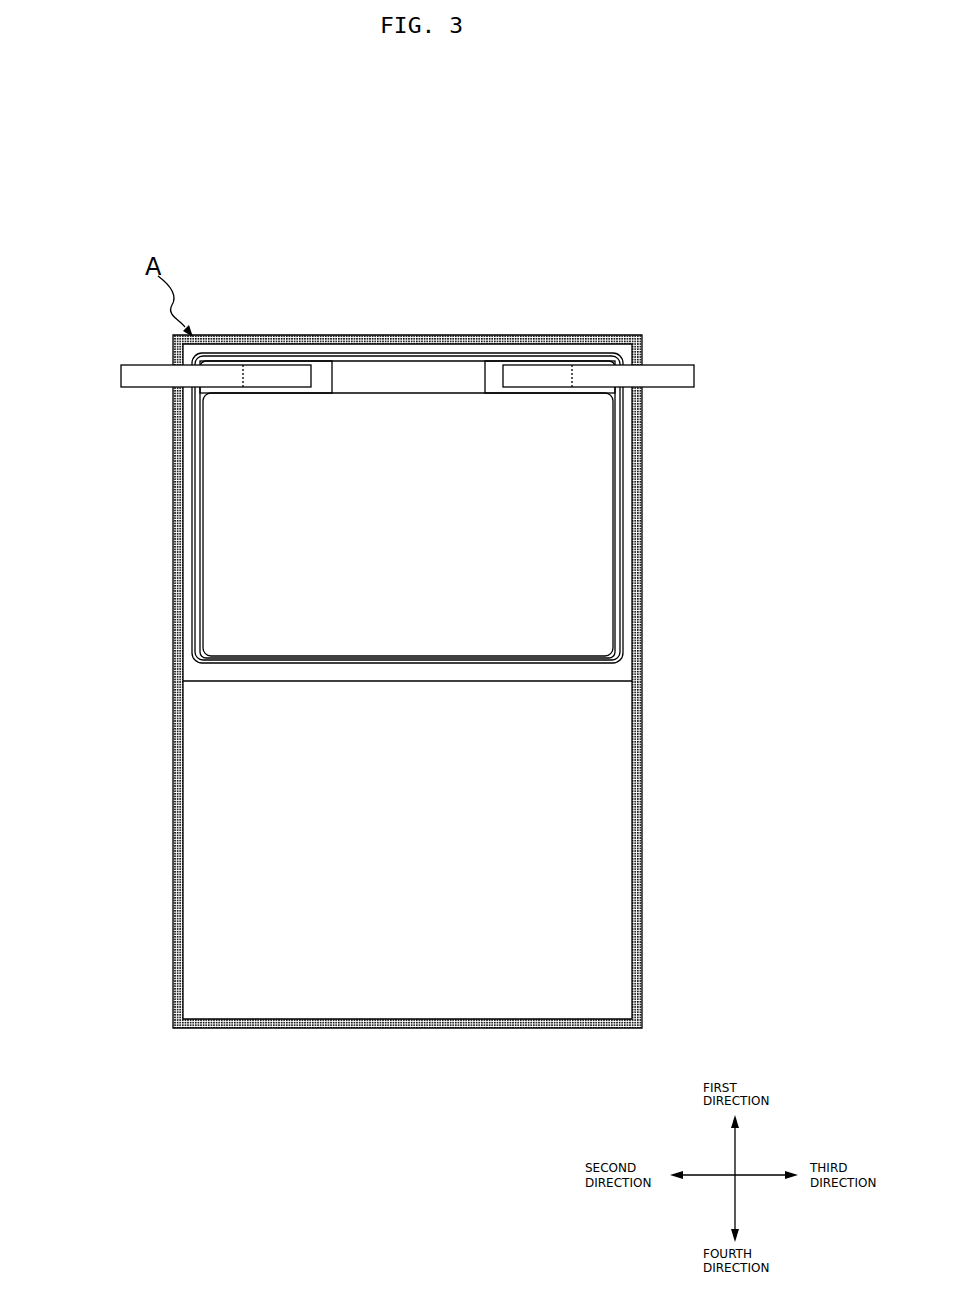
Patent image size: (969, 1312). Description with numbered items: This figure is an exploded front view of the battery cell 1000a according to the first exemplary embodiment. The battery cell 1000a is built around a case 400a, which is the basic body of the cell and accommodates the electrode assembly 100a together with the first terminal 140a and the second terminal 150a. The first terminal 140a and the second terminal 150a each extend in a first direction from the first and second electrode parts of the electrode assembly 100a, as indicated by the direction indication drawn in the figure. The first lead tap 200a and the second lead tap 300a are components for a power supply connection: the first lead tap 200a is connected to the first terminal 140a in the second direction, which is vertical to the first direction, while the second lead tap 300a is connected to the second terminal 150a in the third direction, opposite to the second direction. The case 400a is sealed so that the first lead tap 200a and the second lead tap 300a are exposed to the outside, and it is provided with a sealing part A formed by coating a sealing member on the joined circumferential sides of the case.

The battery cell 1000a is at (112, 224).
The electrode assembly 100a is at (413, 420).
The first terminal 140a is at (322, 365).
The second terminal 150a is at (495, 367).
The first lead tap 200a is at (153, 377).
The second lead tap 300a is at (662, 378).
The case 400a is at (631, 520).